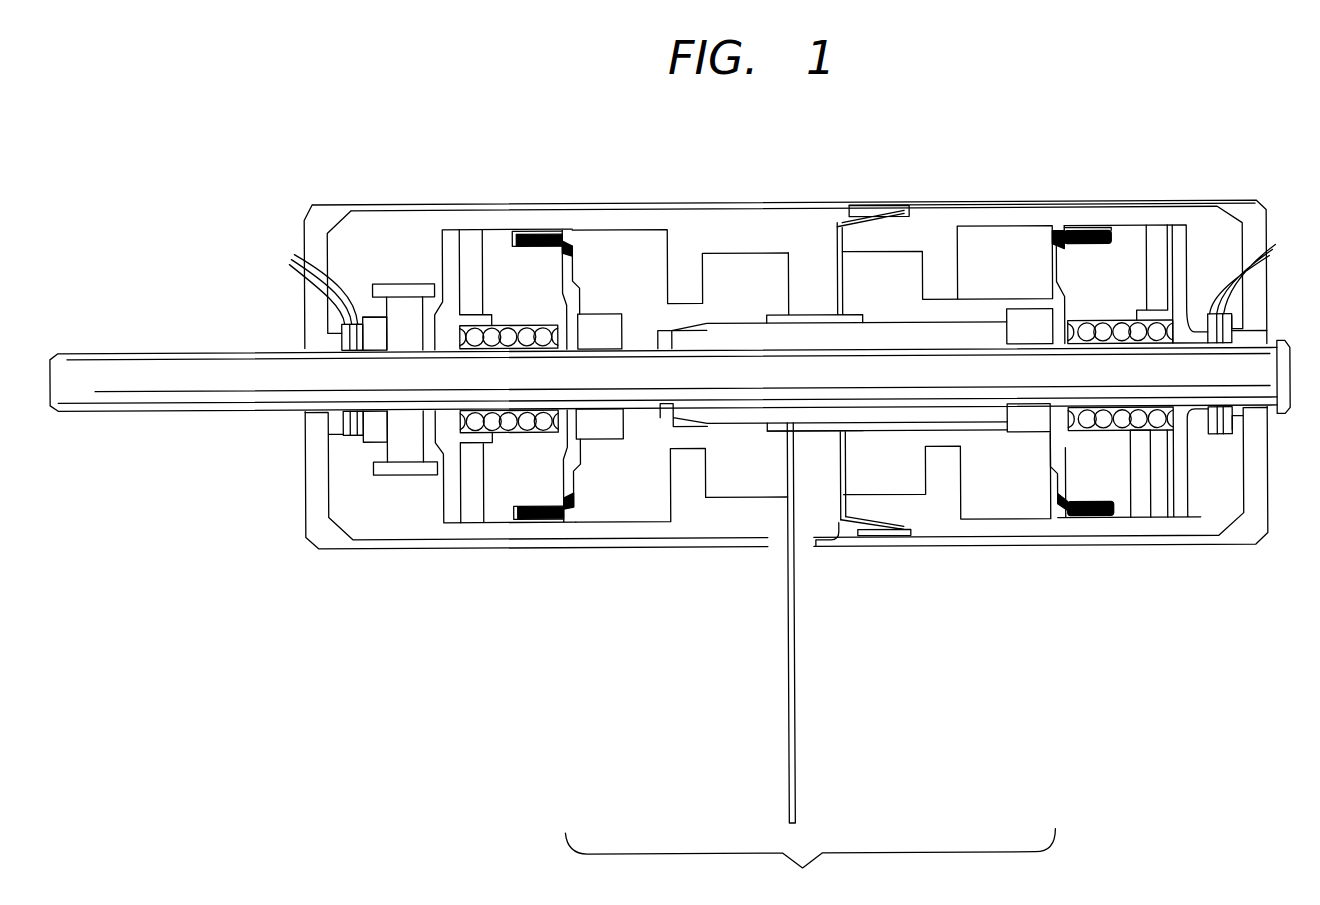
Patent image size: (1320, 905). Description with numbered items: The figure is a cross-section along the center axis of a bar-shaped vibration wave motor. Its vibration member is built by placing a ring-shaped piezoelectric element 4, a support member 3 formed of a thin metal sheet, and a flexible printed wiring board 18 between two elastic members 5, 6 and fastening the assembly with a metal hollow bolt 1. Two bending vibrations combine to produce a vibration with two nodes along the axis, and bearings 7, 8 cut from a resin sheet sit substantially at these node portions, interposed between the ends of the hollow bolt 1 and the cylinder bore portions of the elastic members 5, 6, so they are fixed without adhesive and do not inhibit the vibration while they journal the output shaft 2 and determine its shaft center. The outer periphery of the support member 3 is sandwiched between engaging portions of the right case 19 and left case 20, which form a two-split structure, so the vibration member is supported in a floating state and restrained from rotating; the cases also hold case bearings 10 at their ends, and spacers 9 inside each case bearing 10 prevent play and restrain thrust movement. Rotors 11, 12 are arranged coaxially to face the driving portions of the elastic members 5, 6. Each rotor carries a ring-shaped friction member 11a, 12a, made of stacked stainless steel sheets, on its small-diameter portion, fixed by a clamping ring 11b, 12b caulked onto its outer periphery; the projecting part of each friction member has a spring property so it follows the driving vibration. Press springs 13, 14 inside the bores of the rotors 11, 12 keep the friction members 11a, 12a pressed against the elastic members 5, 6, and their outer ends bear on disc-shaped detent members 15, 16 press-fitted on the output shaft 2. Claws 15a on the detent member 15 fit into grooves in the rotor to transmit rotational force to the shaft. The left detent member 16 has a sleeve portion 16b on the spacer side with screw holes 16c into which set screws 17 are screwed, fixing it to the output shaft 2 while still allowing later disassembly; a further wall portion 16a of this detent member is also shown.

The hollow bolt 1 is at (730, 414).
The output shaft 2 is at (143, 397).
The support member 3 is at (863, 207).
The piezoelectric element 4 is at (817, 258).
The elastic member 5 is at (1003, 232).
The elastic member 6 is at (620, 245).
The bearing 7 is at (977, 418).
The bearing 8 is at (660, 418).
The spacer 9 is at (785, 269).
The case bearing 10 is at (322, 416).
The rotor 11 is at (1130, 520).
The friction member 11a is at (1060, 519).
The clamping ring 11b is at (1083, 230).
The rotor 12 is at (500, 515).
The friction member 12a is at (570, 523).
The clamping ring 12b is at (543, 232).
The press spring 13 is at (1120, 322).
The press spring 14 is at (510, 323).
The detent member 15 is at (1185, 500).
The claw 15a is at (1163, 225).
The detent member 16 is at (446, 498).
The bearing holder wall 16a is at (472, 228).
The sleeve portion 16b is at (368, 313).
The screw hole 16c is at (392, 442).
The set screw 17 is at (407, 281).
The flexible printed wiring board 18 is at (795, 610).
The right case 19 is at (935, 203).
The left case 20 is at (693, 203).